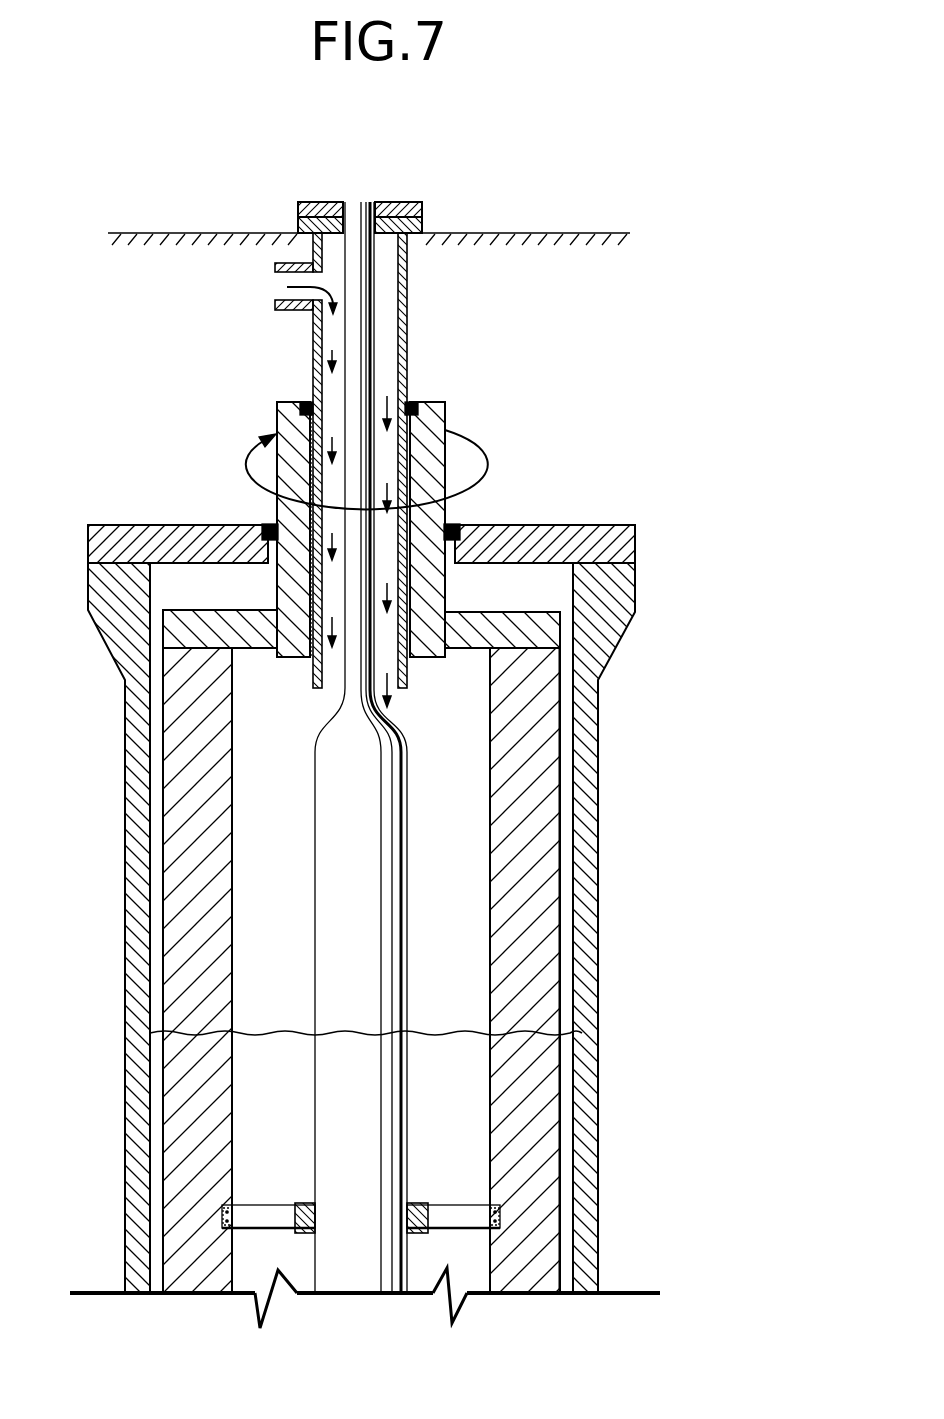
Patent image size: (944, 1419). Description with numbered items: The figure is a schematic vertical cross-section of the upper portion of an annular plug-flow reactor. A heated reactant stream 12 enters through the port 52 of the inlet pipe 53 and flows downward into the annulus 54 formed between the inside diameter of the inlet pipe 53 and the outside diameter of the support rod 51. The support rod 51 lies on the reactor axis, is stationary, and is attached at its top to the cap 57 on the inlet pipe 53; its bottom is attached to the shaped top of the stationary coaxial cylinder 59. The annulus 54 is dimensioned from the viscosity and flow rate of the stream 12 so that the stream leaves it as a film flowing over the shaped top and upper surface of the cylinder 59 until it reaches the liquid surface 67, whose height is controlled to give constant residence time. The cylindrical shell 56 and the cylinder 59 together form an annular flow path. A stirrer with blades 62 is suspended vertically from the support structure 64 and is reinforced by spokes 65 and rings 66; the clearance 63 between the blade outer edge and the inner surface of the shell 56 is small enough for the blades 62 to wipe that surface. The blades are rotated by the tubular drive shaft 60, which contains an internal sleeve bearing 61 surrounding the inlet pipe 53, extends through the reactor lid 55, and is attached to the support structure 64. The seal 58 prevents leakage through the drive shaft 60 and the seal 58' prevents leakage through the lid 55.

The heated reactant stream 12 is at (259, 280).
The support rod 51 is at (357, 307).
The port 52 is at (283, 312).
The inlet pipe 53 is at (405, 335).
The annulus 54 is at (331, 395).
The reactor lid 55 is at (575, 527).
The cylindrical shell 56 is at (588, 790).
The cap 57 is at (400, 203).
The seal 58 is at (386, 380).
The seal 58' is at (390, 511).
The stationary coaxial cylinder 59 is at (345, 988).
The tubular drive shaft 60 is at (433, 457).
The internal sleeve bearing 61 is at (442, 410).
The blades 62 is at (530, 752).
The clearance 63 is at (568, 997).
The support structure 64 is at (530, 610).
The spokes 65 is at (268, 1222).
The rings 66 is at (420, 1234).
The liquid surface 67 is at (582, 1033).